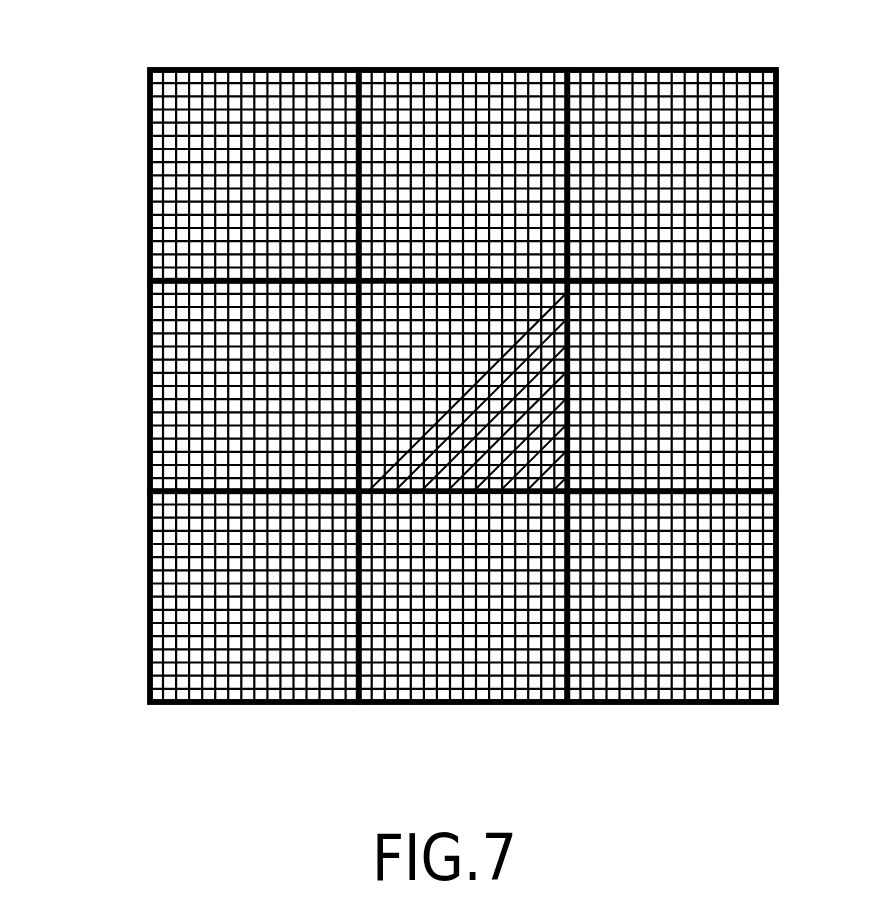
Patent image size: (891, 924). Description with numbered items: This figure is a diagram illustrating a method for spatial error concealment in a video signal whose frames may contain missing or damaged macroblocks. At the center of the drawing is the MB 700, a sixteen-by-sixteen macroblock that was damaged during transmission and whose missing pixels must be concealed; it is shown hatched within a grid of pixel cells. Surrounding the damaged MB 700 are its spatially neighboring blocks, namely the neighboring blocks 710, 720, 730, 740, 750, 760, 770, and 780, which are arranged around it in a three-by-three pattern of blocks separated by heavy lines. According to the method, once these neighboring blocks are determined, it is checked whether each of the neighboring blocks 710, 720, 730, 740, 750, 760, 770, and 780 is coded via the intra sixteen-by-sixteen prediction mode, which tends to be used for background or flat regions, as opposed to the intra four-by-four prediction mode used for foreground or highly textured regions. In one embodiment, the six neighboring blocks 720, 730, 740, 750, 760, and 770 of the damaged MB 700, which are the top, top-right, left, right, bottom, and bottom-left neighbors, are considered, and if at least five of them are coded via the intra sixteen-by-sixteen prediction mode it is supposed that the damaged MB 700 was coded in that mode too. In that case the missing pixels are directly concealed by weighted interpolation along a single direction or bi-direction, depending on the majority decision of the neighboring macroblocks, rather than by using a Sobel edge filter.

The macroblock 700 is at (463, 389).
The neighboring block 710 is at (149, 138).
The neighboring block 720 is at (440, 69).
The neighboring block 730 is at (685, 69).
The neighboring block 740 is at (149, 393).
The neighboring block 750 is at (777, 314).
The neighboring block 760 is at (149, 612).
The neighboring block 770 is at (415, 702).
The neighboring block 780 is at (665, 702).